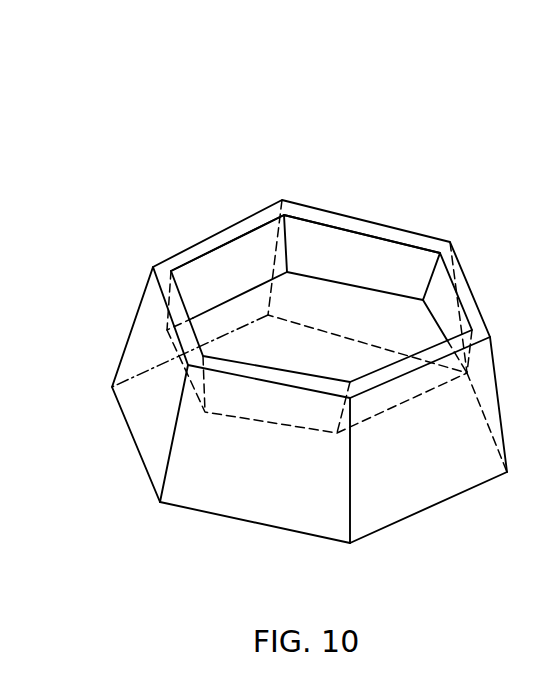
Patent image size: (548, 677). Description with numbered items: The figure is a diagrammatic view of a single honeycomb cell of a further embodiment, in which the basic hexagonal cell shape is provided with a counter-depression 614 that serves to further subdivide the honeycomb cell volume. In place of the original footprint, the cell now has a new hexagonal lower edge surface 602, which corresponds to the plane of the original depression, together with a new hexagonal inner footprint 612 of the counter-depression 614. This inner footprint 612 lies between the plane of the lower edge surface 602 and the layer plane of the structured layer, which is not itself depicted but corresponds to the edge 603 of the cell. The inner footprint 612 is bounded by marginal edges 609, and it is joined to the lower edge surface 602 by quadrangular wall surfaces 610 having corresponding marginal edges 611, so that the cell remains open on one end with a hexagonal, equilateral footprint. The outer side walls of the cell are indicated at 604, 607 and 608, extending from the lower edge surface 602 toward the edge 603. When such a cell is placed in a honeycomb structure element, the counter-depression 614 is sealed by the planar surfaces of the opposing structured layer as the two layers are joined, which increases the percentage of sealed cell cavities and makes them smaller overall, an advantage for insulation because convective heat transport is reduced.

The lower edge surface 602 is at (163, 264).
The edge 603 is at (126, 423).
The front side wall 604 is at (312, 445).
The front face 607 is at (255, 494).
The right side wall 608 is at (352, 460).
The marginal edges 609 is at (348, 287).
The quadrangular wall surfaces 610 is at (227, 272).
The marginal edges 611 is at (282, 244).
The inner footprint 612 is at (319, 381).
The counter-depression 614 is at (324, 310).